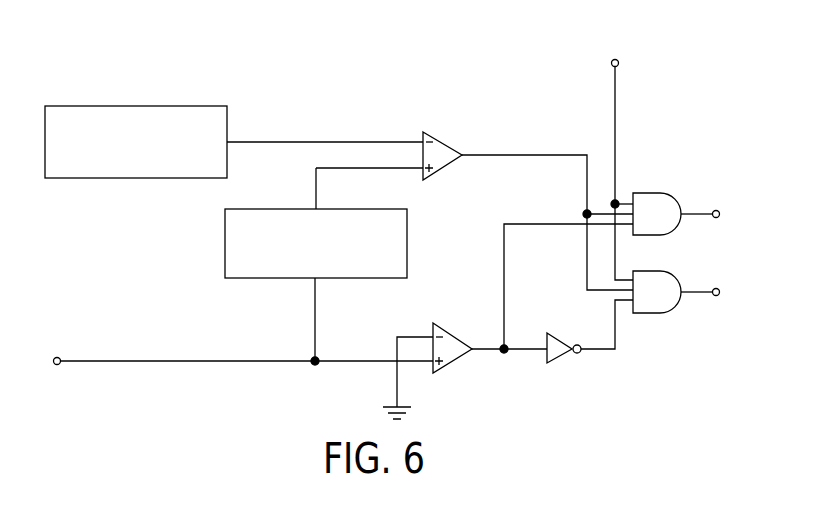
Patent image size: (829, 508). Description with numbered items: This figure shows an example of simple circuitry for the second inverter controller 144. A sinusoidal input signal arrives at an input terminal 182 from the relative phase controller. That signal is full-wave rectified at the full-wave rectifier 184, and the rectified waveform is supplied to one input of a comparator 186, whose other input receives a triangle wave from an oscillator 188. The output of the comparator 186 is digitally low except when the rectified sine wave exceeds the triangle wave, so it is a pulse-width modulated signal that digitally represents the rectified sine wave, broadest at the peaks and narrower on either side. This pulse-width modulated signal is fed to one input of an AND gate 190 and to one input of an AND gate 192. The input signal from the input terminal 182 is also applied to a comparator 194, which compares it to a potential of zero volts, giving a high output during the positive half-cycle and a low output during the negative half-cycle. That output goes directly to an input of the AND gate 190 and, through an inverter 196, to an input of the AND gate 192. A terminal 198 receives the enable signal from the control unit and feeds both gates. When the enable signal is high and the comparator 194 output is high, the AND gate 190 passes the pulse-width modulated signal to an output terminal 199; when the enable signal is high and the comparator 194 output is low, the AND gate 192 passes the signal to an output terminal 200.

The second inverter controller 144 is at (308, 70).
The input terminal 182 is at (60, 365).
The full-wave rectifier 184 is at (252, 278).
The comparator 186 is at (439, 133).
The oscillator 188 is at (120, 178).
The AND gate 190 is at (647, 192).
The AND gate 192 is at (652, 313).
The comparator 194 is at (445, 325).
The inverter 196 is at (560, 358).
The terminal 198 is at (619, 62).
The output terminal 199 is at (720, 213).
The output terminal 200 is at (720, 291).